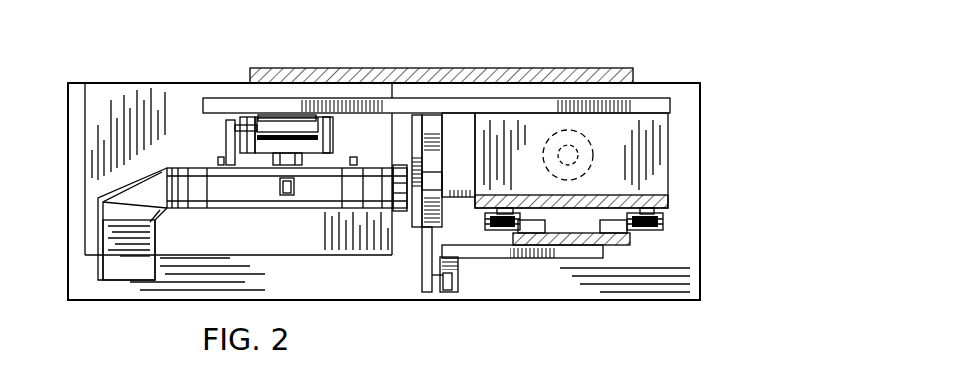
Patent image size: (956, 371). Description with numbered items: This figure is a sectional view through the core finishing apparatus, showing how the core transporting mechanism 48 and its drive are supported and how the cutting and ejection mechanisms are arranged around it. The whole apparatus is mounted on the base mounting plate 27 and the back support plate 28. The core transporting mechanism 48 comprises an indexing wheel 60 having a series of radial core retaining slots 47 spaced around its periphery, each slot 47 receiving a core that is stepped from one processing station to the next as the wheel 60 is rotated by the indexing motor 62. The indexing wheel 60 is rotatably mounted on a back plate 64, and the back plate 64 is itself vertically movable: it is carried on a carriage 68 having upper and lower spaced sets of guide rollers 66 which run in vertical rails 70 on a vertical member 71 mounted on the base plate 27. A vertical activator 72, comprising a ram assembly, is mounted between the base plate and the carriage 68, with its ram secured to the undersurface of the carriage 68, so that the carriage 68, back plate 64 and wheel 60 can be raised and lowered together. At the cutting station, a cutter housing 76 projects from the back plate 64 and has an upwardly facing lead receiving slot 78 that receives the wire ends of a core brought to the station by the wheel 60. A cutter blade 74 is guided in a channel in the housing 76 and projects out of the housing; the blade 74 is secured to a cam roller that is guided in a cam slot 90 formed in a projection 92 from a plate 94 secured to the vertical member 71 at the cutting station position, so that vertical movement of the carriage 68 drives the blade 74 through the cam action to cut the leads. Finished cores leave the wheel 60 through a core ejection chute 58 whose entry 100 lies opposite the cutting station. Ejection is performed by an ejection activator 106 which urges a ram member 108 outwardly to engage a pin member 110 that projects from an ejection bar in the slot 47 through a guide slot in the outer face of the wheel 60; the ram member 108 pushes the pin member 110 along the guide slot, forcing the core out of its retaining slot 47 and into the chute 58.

The base mounting plate 27 is at (658, 83).
The back support plate 28 is at (348, 72).
The back plate 64 is at (470, 105).
The indexing motor 62 is at (335, 143).
The ejection activator 106 is at (260, 116).
The ram member 108 is at (226, 137).
The pin member 110 is at (218, 161).
The indexing wheel 60 is at (237, 192).
The core retaining slot 47 is at (288, 195).
The core transporting mechanism 48 is at (317, 214).
The entry 100 is at (160, 193).
The core ejection chute 58 is at (122, 270).
The cutter housing 76 is at (417, 227).
The lead receiving slot 78 is at (421, 181).
The cutter blade 74 is at (423, 263).
The projection 92 is at (457, 287).
The cam slot 90 is at (440, 292).
The plate 94 is at (513, 253).
The vertical member 71 is at (608, 245).
The guide rollers 66 is at (487, 223).
The vertical rails 70 is at (525, 212).
The carriage 68 is at (660, 183).
The vertical activator 72 is at (590, 142).